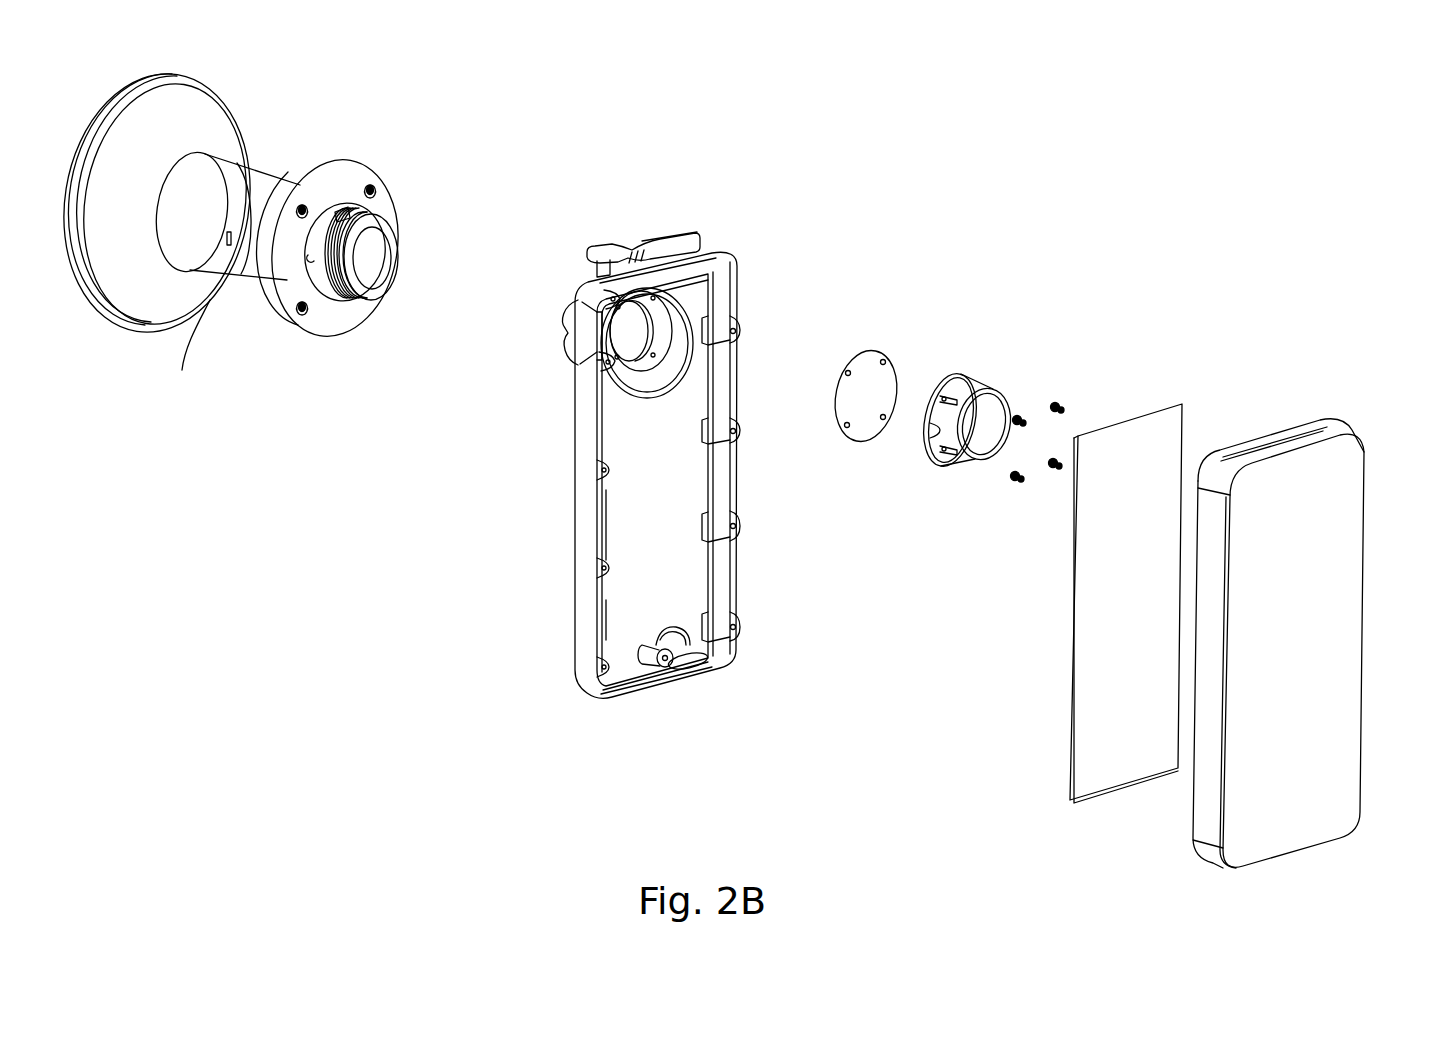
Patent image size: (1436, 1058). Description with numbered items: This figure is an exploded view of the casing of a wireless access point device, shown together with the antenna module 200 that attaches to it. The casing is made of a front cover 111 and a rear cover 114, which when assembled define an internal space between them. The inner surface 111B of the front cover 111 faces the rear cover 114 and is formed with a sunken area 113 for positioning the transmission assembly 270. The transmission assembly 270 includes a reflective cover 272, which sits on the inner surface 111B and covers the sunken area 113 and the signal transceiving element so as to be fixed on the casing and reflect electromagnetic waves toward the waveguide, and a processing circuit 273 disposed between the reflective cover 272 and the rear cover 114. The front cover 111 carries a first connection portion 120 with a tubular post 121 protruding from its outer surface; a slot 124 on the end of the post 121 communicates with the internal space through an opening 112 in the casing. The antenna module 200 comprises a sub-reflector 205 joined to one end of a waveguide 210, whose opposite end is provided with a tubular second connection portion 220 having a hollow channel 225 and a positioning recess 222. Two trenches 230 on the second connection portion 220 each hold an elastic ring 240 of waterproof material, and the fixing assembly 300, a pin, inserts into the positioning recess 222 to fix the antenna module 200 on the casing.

The antenna module 200 is at (330, 452).
The sub-reflector 205 is at (165, 318).
The waveguide 210 is at (262, 268).
The second connection portion 220 is at (322, 292).
The positioning recess 222 is at (345, 205).
The hollow channel 225 is at (380, 291).
The trench 230 is at (345, 308).
The elastic ring 240 is at (370, 216).
The fixing assembly 300 is at (688, 230).
The front cover 111 is at (590, 500).
The inner surface 111B is at (617, 615).
The opening 112 is at (664, 312).
The sunken area 113 is at (693, 352).
The first connection portion 120 is at (568, 296).
The post 121 is at (602, 324).
The slot 124 is at (610, 338).
The transmission assembly 270 is at (840, 592).
The reflective cover 272 is at (870, 420).
The processing circuit 273 is at (1083, 537).
The rear cover 114 is at (1330, 570).